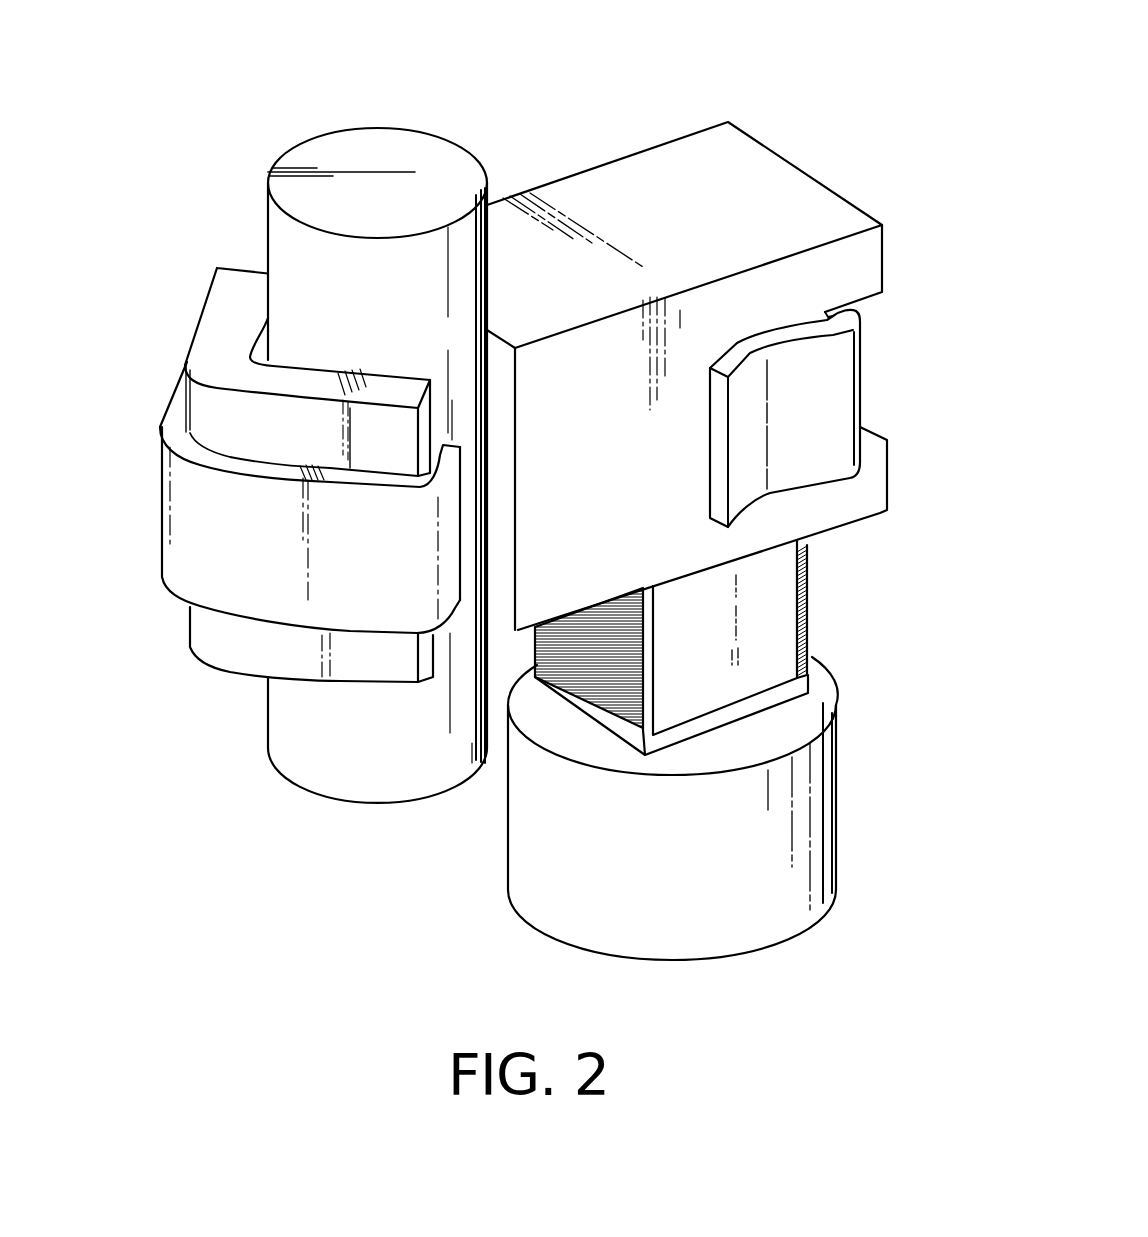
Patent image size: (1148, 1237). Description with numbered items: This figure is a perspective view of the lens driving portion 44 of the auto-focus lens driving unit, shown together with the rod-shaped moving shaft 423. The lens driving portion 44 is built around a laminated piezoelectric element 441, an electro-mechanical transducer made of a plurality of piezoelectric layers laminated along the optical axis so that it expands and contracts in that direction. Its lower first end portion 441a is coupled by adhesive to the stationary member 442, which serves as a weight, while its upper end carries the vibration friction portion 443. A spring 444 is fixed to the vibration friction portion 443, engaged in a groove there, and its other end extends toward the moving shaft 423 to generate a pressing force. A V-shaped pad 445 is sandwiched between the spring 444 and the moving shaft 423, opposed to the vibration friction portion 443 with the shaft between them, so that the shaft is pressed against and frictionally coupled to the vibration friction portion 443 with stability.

The lens driving portion 44 is at (612, 127).
The rod-shaped moving shaft 423 is at (280, 235).
The laminated piezoelectric element 441 is at (780, 602).
The first end portion 441a is at (768, 713).
The stationary member 442 is at (830, 864).
The vibration friction portion 443 is at (797, 183).
The spring 444 is at (182, 516).
The pad 445 is at (203, 630).